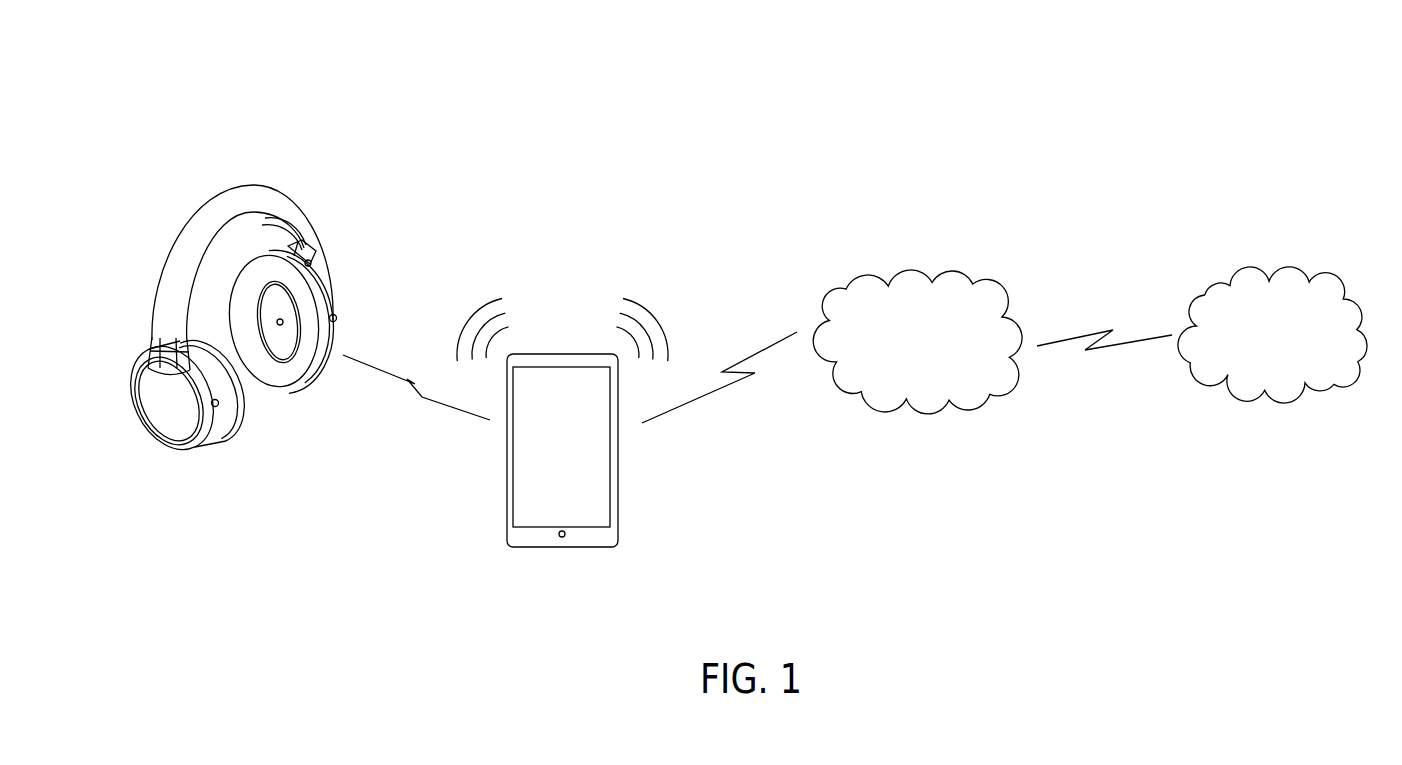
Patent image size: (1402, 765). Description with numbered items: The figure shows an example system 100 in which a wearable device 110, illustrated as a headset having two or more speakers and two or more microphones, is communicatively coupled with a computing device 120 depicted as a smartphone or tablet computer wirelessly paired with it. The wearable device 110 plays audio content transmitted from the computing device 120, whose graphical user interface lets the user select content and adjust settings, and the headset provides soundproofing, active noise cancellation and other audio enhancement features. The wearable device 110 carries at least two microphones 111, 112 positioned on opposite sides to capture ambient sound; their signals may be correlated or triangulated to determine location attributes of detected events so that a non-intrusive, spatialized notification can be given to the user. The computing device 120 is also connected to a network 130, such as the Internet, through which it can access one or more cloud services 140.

The system 100 is at (1267, 102).
The wearable device 110 is at (218, 217).
The microphone 111 is at (336, 318).
The microphone 112 is at (217, 407).
The computing device 120 is at (542, 458).
The network 130 is at (894, 375).
The cloud services 140 is at (1259, 367).